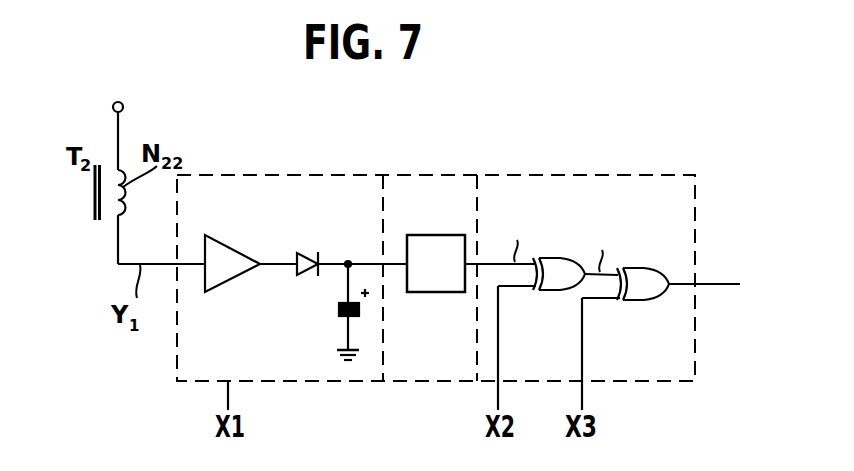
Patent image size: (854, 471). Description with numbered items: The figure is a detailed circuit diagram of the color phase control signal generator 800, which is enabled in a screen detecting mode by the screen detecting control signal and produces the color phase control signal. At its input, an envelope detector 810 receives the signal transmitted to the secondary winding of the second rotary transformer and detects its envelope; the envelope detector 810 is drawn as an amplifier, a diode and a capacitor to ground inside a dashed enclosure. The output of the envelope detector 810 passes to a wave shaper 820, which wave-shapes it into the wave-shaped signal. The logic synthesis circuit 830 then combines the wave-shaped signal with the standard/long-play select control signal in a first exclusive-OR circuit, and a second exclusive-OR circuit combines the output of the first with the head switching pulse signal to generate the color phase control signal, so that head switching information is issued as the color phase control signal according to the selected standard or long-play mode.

The color phase control signal generator 800 is at (429, 115).
The envelope detector 810 is at (330, 175).
The wave shaper 820 is at (432, 175).
The logic synthesis circuit 830 is at (597, 175).